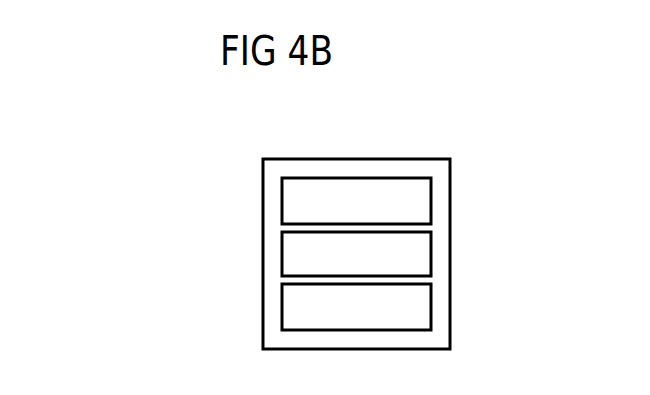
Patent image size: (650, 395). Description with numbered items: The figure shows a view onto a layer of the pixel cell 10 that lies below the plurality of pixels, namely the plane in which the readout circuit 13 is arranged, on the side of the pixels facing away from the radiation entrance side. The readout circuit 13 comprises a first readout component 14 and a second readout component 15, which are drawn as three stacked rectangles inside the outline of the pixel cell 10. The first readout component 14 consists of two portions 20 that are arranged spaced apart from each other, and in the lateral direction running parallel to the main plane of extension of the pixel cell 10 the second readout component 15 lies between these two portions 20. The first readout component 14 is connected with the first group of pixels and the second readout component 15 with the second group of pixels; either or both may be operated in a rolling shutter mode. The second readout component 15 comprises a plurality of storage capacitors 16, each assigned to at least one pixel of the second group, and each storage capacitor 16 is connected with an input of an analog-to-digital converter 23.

The pixel cell 10 is at (460, 132).
The readout circuit 13 is at (553, 179).
The first readout component 14 is at (423, 206).
The portions 20 is at (423, 306).
The second readout component 15 is at (408, 251).
The storage capacitors 16 is at (423, 256).
The analog-to-digital converter 23 is at (290, 256).